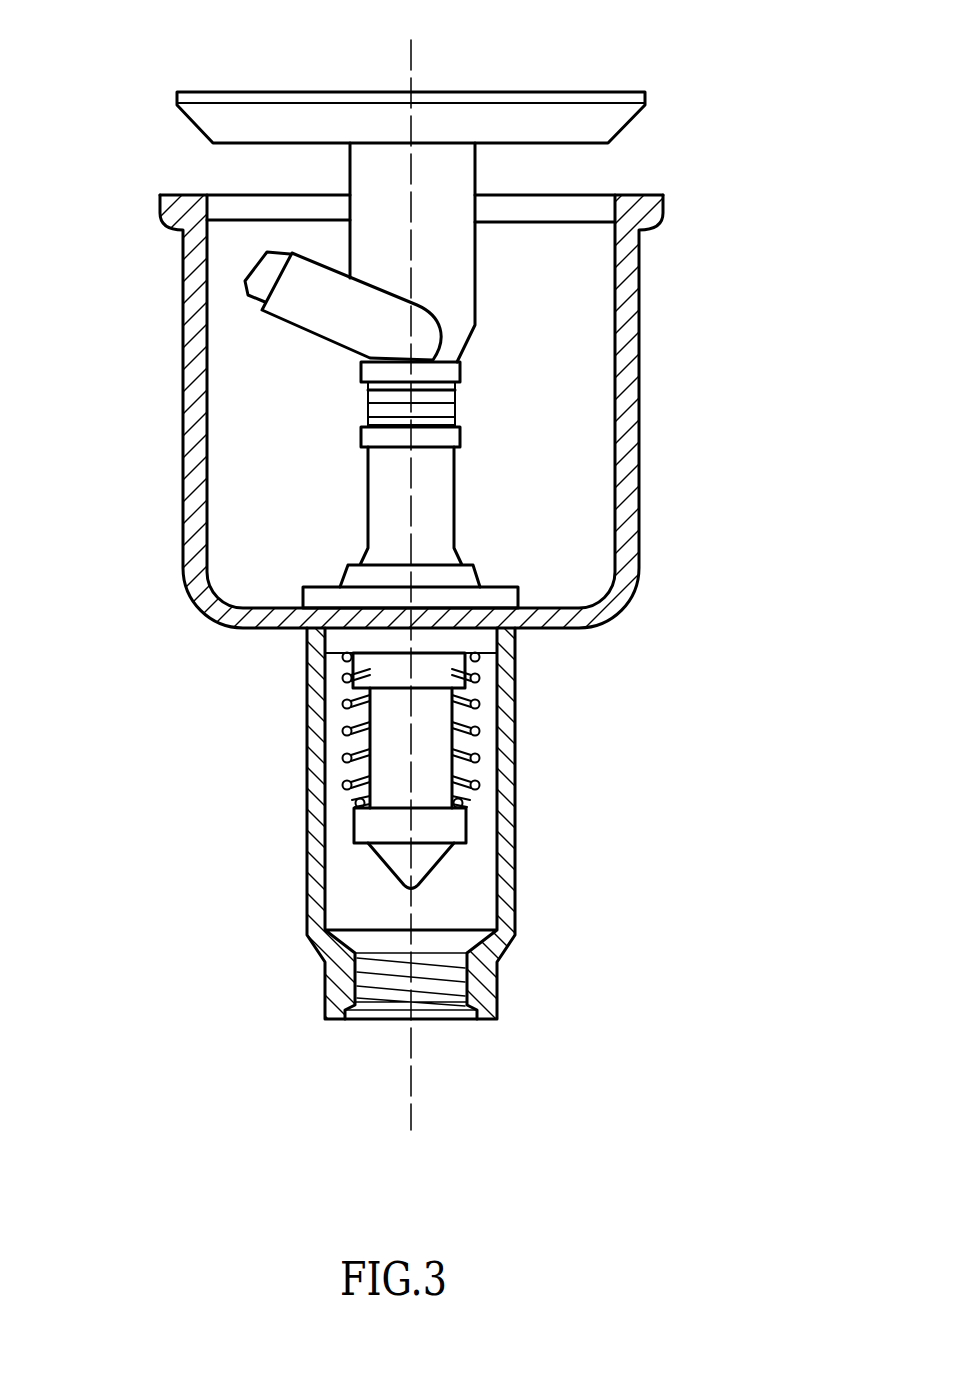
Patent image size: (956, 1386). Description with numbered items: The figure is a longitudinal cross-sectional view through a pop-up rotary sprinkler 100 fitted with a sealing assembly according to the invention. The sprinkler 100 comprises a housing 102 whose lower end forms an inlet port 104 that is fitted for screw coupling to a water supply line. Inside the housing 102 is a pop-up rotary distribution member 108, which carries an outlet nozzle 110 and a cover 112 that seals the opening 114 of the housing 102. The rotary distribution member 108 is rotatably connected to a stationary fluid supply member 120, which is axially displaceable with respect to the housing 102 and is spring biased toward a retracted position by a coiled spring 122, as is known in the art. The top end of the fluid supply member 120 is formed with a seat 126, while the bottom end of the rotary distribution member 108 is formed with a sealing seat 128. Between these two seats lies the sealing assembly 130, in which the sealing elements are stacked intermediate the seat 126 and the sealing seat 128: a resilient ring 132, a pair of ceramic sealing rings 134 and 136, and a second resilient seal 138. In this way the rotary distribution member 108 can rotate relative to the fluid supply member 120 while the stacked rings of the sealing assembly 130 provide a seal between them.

The sprinkler 100 is at (182, 685).
The housing 102 is at (640, 550).
The inlet port 104 is at (445, 1019).
The pop-up rotary distribution member 108 is at (443, 268).
The outlet nozzle 110 is at (262, 272).
The cover 112 is at (565, 120).
The opening 114 is at (232, 203).
The stationary fluid supply member 120 is at (442, 495).
The coiled spring 122 is at (480, 750).
The seat 126 is at (368, 438).
The sealing seat 128 is at (368, 372).
The sealing assembly 130 is at (417, 413).
The resilient ring 132 is at (455, 423).
The ceramic sealing ring 134 is at (455, 412).
The ceramic sealing ring 136 is at (455, 397).
The second resilient seal 138 is at (455, 384).